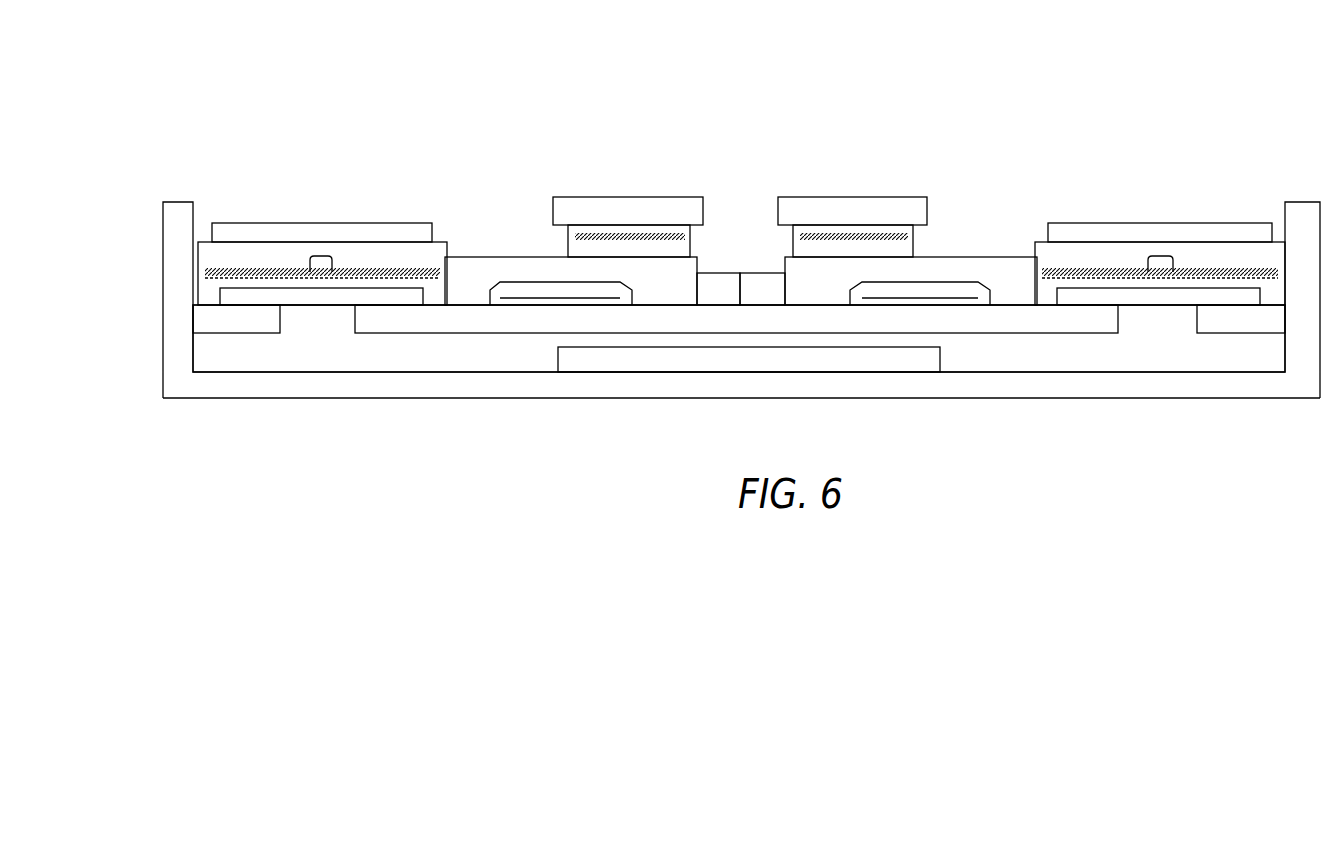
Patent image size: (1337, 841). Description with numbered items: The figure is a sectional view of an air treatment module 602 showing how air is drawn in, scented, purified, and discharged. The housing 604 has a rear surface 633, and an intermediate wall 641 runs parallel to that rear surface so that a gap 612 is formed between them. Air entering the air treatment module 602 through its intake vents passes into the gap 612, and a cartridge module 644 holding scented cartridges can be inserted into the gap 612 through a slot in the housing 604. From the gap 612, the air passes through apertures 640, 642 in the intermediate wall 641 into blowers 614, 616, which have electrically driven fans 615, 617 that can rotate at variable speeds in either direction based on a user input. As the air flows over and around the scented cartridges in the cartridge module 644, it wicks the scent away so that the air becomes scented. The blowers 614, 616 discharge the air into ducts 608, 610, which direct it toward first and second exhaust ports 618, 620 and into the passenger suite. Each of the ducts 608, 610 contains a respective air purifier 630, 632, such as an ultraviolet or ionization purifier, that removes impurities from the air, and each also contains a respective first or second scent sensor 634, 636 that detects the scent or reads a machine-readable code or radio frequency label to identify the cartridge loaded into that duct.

The air treatment module 602 is at (260, 110).
The housing 604 is at (183, 303).
The duct 608 is at (557, 322).
The duct 610 is at (911, 314).
The gap 612 is at (739, 390).
The blower 614 is at (306, 306).
The electrically driven fan 615 is at (321, 280).
The blower 616 is at (1150, 304).
The electrically driven fan 617 is at (1163, 280).
The first exhaust port 618 is at (663, 197).
The second exhaust port 620 is at (898, 197).
The air purifier 630 is at (563, 290).
The air purifier 632 is at (917, 293).
The rear surface 633 is at (1017, 398).
The first scent sensor 634 is at (582, 237).
The second scent sensor 636 is at (818, 240).
The aperture 640 is at (323, 322).
The intermediate wall 641 is at (612, 320).
The aperture 642 is at (1168, 317).
The cartridge module 644 is at (722, 350).